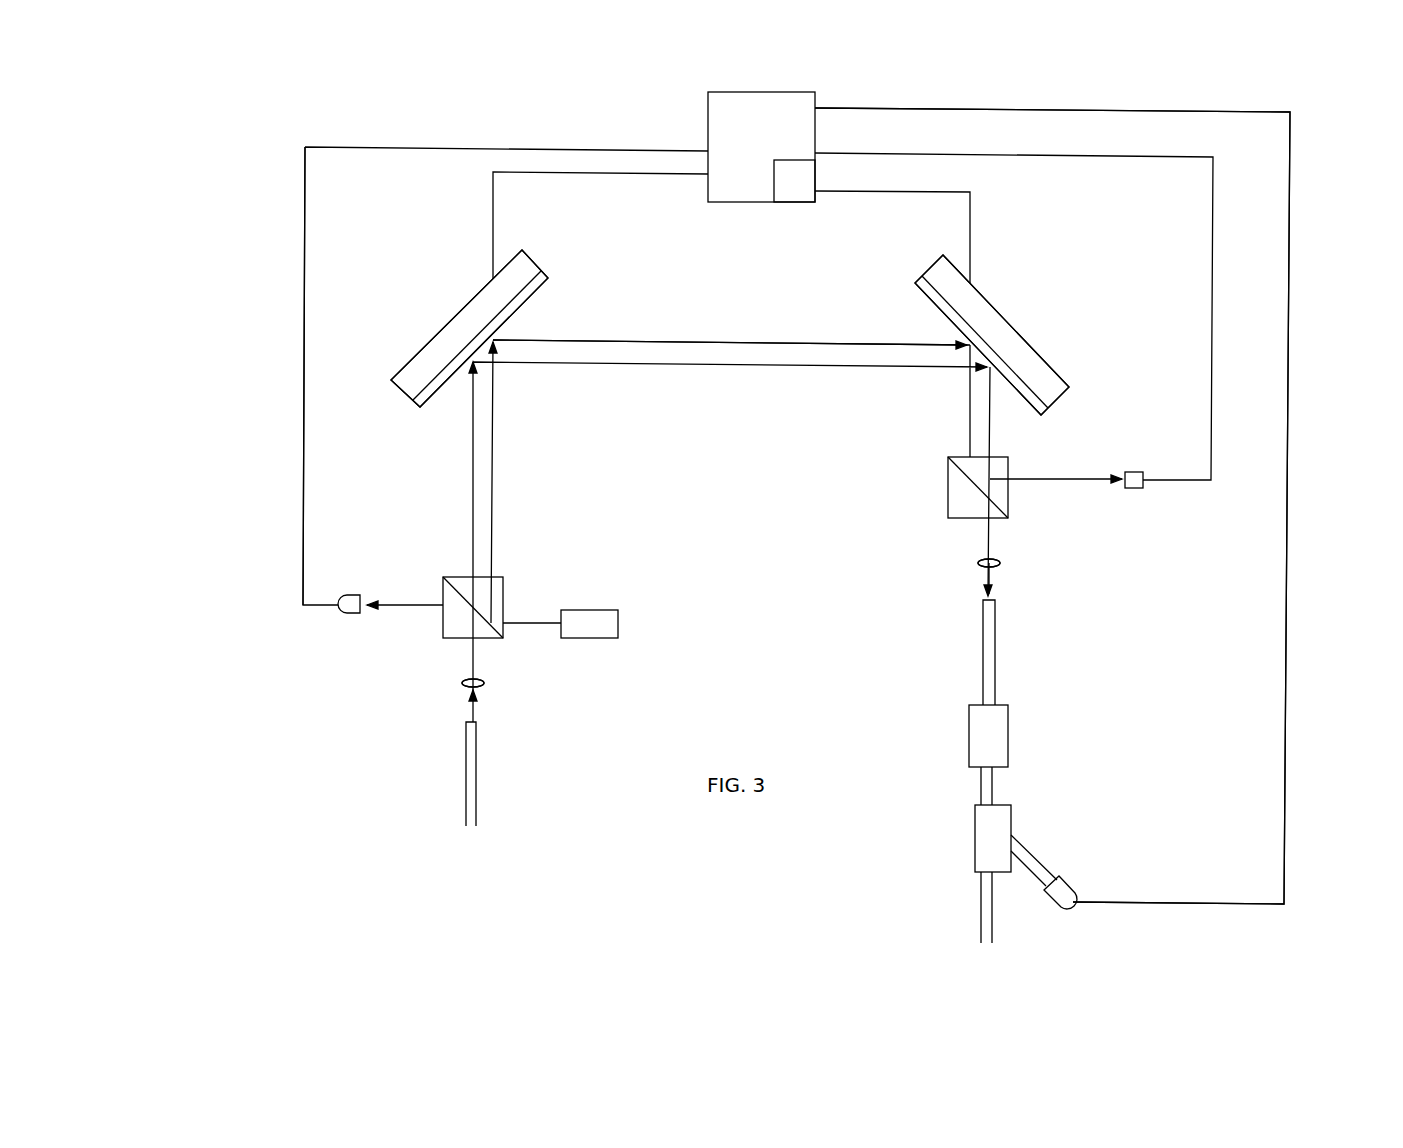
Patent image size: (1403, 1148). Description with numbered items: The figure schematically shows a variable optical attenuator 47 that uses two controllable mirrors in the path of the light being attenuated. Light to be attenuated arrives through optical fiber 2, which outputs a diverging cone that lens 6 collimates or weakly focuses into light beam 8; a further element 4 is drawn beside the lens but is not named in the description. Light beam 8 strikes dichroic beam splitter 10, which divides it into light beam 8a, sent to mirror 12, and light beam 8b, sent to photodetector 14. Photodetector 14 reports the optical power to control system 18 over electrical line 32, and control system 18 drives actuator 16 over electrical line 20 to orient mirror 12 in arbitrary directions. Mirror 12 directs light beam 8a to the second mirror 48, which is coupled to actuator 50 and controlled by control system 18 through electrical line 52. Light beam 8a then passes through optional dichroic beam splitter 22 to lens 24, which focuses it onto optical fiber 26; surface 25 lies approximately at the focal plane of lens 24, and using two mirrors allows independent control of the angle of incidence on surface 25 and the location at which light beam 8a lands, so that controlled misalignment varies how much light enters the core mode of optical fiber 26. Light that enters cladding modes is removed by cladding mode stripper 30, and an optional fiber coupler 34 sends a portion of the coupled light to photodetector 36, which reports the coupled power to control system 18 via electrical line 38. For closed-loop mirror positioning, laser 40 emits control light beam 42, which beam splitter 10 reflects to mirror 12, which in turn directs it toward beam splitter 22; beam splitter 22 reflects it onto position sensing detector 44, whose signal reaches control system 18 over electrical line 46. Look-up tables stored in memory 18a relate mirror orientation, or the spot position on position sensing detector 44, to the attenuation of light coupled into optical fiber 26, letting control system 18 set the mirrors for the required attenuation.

The optical fiber 2 is at (478, 775).
The lens 4 is at (480, 687).
The lens 6 is at (463, 685).
The light beam 8 is at (470, 648).
The light beam 8a is at (473, 497).
The light beam 8b is at (400, 605).
The beam splitter 10 is at (503, 590).
The mirror 12 is at (550, 277).
The photodetector 14 is at (350, 614).
The actuator 16 is at (533, 258).
The control system 18 is at (707, 100).
The memory 18a is at (785, 200).
The electrical line 20 is at (612, 175).
The beam splitter 22 is at (948, 487).
The lens 24 is at (978, 563).
The surface 25 is at (991, 584).
The optical fiber 26 is at (983, 651).
The cladding mode stripper 30 is at (969, 732).
The electrical line 32 is at (304, 418).
The fiber coupler 34 is at (975, 835).
The photodetector 36 is at (1054, 907).
The electrical line 38 is at (1290, 157).
The laser 40 is at (595, 638).
The control light beam 42 is at (732, 342).
The position sensing detector 44 is at (1133, 490).
The electrical line 46 is at (1212, 350).
The variable optical attenuator 47 is at (272, 140).
The mirror 48 is at (1042, 420).
The actuator 50 is at (1077, 403).
The electrical line 52 is at (970, 245).